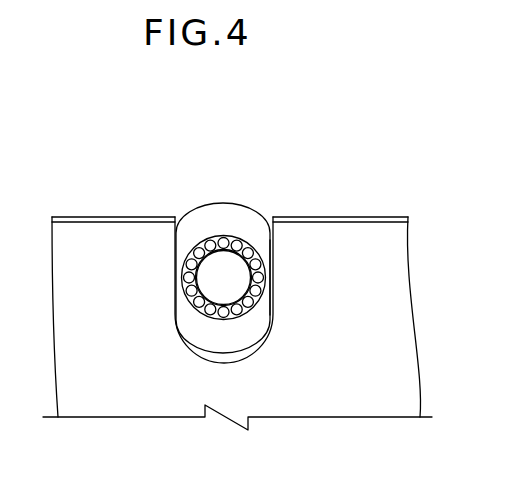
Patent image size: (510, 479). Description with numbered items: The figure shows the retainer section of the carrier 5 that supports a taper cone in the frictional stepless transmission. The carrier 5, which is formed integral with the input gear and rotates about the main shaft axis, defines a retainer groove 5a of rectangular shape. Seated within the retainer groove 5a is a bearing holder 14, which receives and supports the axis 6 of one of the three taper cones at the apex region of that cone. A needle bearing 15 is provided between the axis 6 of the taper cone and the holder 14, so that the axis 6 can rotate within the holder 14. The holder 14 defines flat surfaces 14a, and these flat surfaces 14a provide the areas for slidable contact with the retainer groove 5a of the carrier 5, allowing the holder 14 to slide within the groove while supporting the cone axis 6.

The carrier 5 is at (93, 227).
The retainer groove 5a is at (232, 353).
The bearing holder 14 is at (203, 215).
The flat surface 14a is at (275, 272).
The needle bearing 15 is at (184, 267).
The axis 6 is at (228, 260).